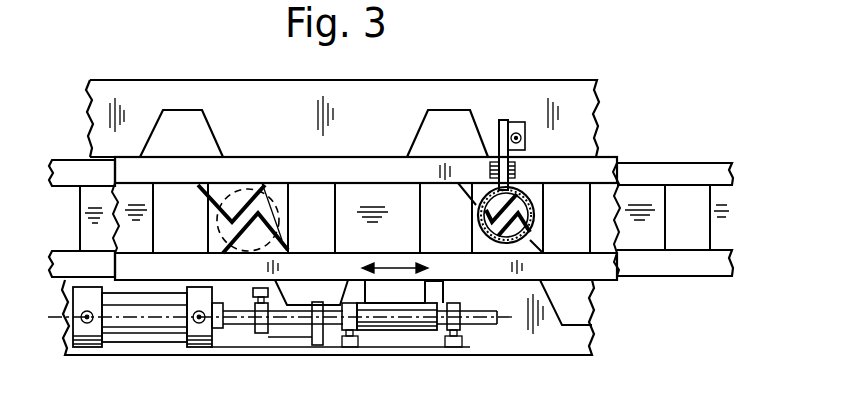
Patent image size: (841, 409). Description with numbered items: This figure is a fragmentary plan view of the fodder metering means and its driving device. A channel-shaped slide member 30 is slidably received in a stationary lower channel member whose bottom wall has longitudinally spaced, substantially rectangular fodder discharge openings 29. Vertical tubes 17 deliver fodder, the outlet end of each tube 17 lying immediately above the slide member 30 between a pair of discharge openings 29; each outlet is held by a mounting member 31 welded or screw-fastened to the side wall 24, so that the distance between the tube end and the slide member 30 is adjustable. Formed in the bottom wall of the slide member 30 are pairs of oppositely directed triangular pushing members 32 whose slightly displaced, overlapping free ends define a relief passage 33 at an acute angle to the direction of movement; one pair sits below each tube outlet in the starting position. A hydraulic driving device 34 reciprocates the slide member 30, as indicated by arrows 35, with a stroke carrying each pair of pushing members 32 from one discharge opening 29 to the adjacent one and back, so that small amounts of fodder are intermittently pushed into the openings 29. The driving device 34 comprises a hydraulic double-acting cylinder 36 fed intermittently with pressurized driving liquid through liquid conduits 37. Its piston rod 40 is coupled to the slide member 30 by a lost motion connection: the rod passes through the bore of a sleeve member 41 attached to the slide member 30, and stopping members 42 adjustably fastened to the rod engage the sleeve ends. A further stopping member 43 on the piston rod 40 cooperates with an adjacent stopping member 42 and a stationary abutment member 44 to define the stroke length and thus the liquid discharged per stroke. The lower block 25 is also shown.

The vertical tube 17 is at (534, 214).
The side wall 24 is at (572, 96).
The lower frame block 25 is at (590, 338).
The fodder discharge openings 29 is at (585, 180).
The slide member 30 is at (368, 168).
The mounting member 31 is at (499, 145).
The pushing members 32 is at (263, 220).
The relief passage 33 is at (232, 223).
The hydraulic driving device 34 is at (214, 352).
The arrows 35 is at (402, 292).
The hydraulic double-acting cylinder 36 is at (140, 328).
The liquid conduits 37 is at (87, 325).
The piston rod 40 is at (283, 325).
The sleeve member 41 is at (415, 320).
The stopping members 42 is at (350, 330).
The stopping member 43 is at (262, 333).
The stationary abutment member 44 is at (317, 340).